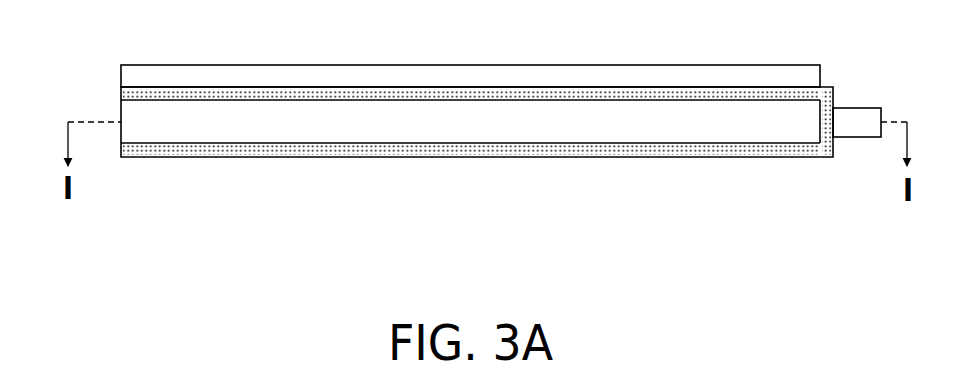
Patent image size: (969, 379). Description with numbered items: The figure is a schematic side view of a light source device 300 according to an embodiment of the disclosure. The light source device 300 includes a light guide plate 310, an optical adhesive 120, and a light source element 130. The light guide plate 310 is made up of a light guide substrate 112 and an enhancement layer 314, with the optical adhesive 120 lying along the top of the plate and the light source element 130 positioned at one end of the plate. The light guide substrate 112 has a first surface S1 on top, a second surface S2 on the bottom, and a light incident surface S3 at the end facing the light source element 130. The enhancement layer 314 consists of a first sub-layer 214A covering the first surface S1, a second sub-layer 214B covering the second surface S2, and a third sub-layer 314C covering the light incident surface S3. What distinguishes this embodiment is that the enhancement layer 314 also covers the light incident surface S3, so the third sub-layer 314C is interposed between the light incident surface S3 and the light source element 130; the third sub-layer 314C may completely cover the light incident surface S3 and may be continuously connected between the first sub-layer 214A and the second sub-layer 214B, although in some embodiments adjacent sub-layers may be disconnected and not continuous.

The light source device 300 is at (467, 165).
The optical adhesive 120 is at (135, 73).
The light source element 130 is at (853, 117).
The light guide plate 310 is at (477, 194).
The enhancement layer 314 is at (477, 171).
The first sub-layer 214A is at (703, 93).
The second sub-layer 214B is at (742, 150).
The third sub-layer 314C is at (800, 150).
The light guide substrate 112 is at (752, 253).
The first surface S1 is at (312, 102).
The second surface S2 is at (246, 144).
The light incident surface S3 is at (817, 118).